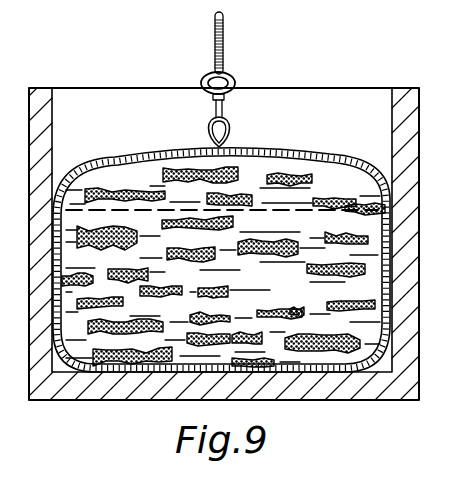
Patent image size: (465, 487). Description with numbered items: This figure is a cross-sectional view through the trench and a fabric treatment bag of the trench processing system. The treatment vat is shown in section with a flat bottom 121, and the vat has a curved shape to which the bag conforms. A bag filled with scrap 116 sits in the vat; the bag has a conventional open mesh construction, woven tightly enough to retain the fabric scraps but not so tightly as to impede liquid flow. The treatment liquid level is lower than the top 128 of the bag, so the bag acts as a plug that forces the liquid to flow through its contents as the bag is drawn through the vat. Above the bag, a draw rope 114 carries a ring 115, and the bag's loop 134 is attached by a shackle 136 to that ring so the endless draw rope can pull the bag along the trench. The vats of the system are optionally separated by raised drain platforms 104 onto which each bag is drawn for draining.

The raised drain platform 104 is at (421, 90).
The draw rope 114 is at (223, 50).
The ring 115 is at (235, 89).
The bag filled with scrap 116 is at (289, 231).
The flat bottom 121 is at (302, 363).
The top of the bag 128 is at (126, 152).
The loop 134 is at (231, 125).
The shackle 136 is at (214, 106).